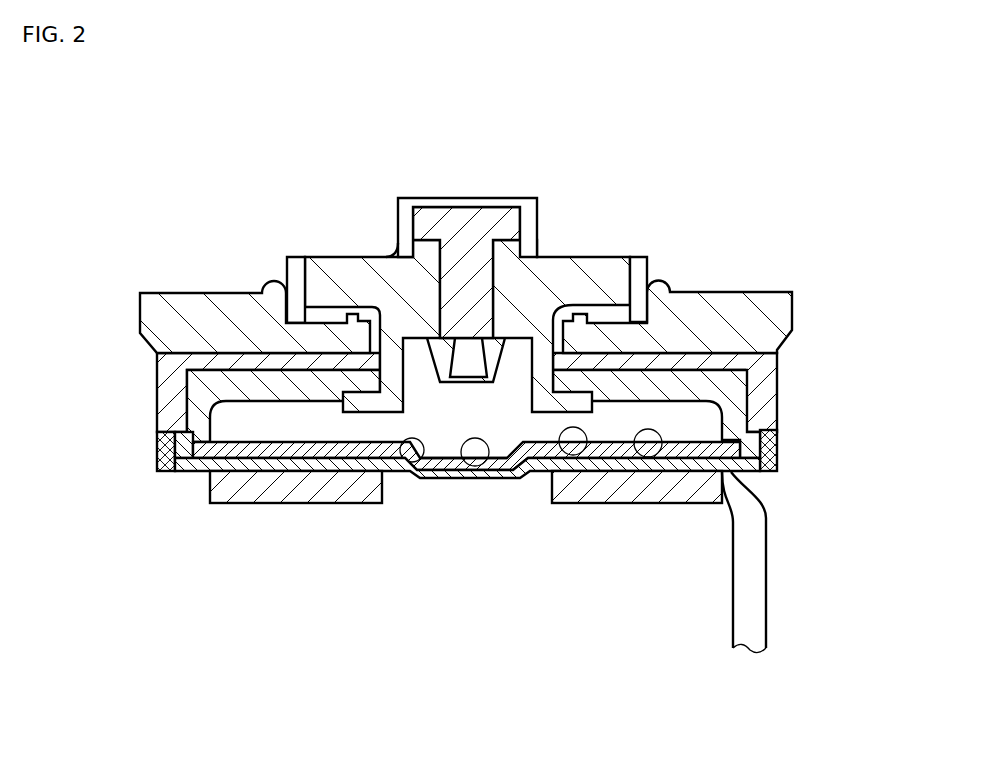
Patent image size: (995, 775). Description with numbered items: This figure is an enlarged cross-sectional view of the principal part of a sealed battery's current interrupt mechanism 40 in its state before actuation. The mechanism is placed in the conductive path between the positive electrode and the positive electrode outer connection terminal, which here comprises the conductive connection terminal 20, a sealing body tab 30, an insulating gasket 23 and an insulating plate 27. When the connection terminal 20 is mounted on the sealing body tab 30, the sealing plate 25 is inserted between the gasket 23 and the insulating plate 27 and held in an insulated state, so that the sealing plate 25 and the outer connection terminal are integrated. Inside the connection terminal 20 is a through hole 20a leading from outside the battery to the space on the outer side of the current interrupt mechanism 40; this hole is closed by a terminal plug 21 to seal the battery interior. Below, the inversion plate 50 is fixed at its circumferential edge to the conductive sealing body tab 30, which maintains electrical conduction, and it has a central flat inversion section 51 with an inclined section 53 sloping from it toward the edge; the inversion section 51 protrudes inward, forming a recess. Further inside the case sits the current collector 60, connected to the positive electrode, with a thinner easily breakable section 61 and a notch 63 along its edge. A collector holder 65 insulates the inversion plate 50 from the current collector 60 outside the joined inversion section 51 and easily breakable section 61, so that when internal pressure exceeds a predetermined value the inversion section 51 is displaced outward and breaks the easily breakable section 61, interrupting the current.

The connection terminal 20 is at (323, 257).
The through hole 20a is at (397, 257).
The terminal plug 21 is at (478, 198).
The insulating gasket 23 is at (643, 257).
The sealing plate 25 is at (762, 292).
The insulating plate 27 is at (779, 405).
The sealing body tab 30 is at (782, 445).
The current interrupt mechanism 40 is at (728, 588).
The inversion plate 50 is at (567, 478).
The inversion section 51 is at (491, 478).
The inclined section 53 is at (637, 505).
The current collector 60 is at (322, 503).
The easily breakable section 61 is at (452, 483).
The notch 63 is at (417, 480).
The collector holder 65 is at (187, 472).